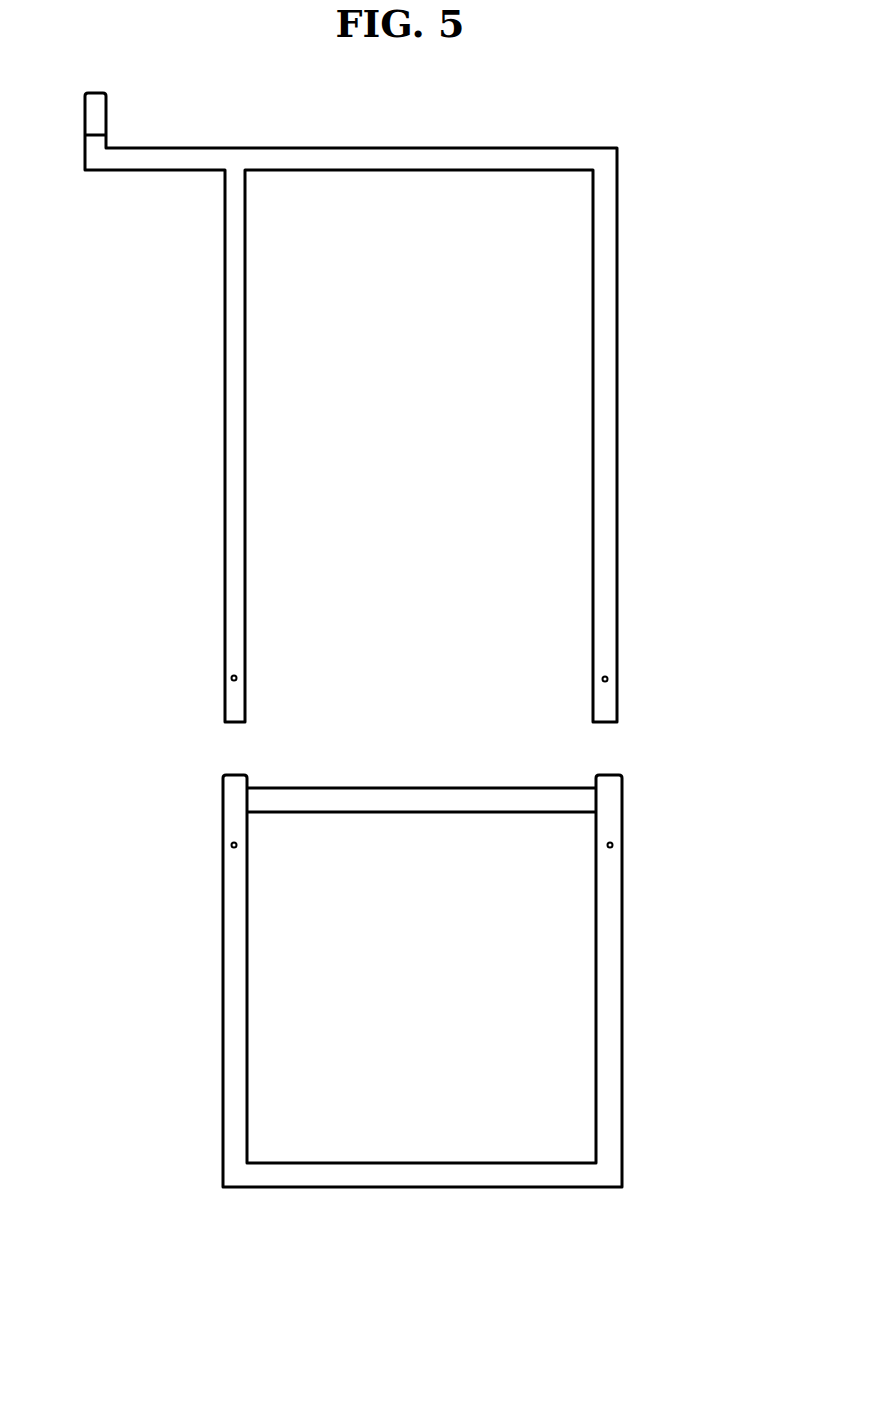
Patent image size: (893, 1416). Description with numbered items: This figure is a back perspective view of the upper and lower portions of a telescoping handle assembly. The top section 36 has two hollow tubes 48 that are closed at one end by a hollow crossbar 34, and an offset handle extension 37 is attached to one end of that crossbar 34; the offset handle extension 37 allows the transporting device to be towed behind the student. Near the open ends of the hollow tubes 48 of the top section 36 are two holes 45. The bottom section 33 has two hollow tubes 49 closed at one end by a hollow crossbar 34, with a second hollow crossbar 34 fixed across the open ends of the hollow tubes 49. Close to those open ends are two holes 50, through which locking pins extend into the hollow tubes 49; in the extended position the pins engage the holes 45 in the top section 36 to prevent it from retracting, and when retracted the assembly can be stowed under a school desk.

The bottom section 33 is at (652, 852).
The hollow crossbar 34 is at (367, 192).
The top section 36 is at (651, 242).
The offset handle extension 37 is at (124, 193).
The holes 45 is at (201, 678).
The hollow tubes 48 is at (268, 475).
The hollow tubes 49 is at (270, 1006).
The holes 50 is at (201, 845).